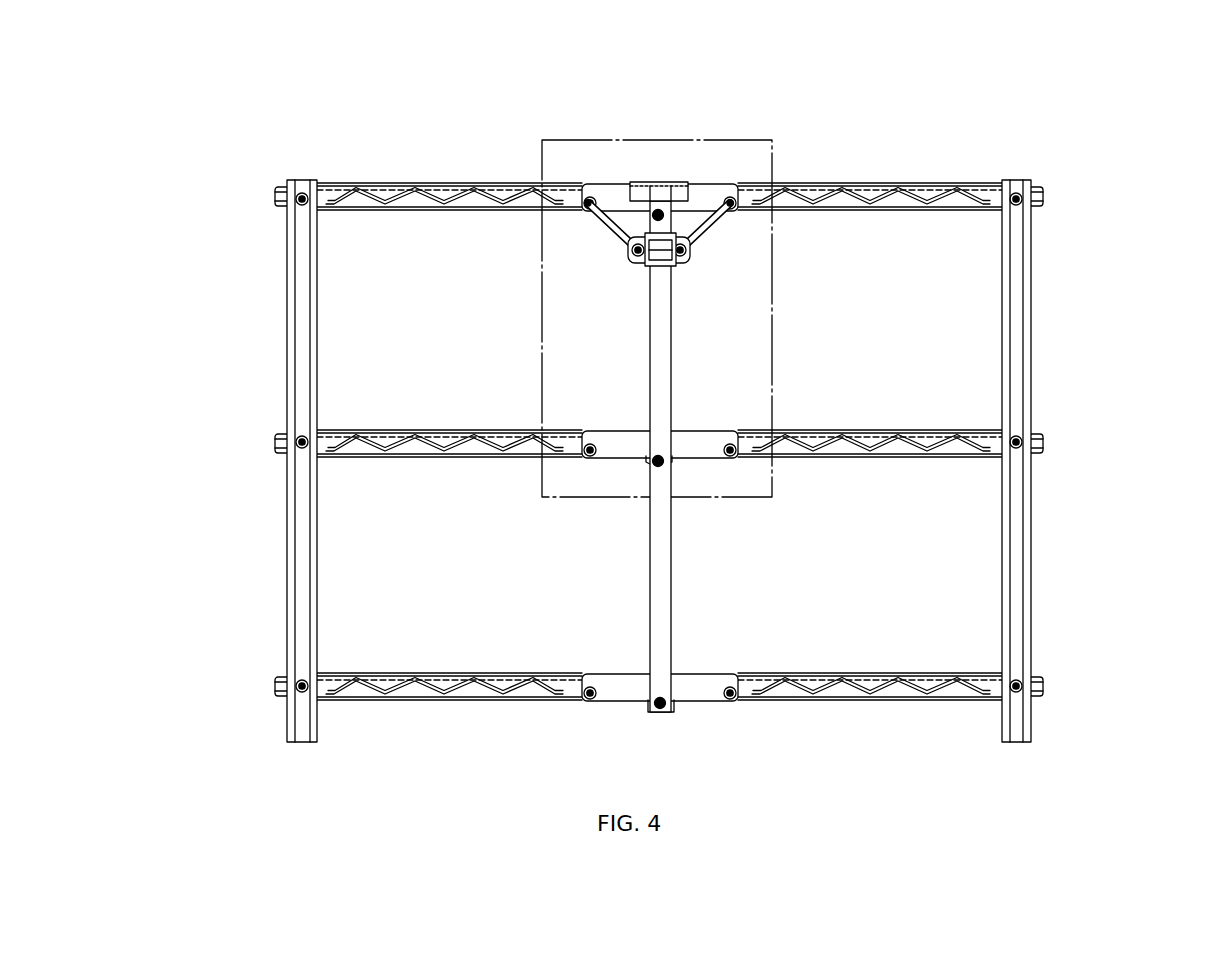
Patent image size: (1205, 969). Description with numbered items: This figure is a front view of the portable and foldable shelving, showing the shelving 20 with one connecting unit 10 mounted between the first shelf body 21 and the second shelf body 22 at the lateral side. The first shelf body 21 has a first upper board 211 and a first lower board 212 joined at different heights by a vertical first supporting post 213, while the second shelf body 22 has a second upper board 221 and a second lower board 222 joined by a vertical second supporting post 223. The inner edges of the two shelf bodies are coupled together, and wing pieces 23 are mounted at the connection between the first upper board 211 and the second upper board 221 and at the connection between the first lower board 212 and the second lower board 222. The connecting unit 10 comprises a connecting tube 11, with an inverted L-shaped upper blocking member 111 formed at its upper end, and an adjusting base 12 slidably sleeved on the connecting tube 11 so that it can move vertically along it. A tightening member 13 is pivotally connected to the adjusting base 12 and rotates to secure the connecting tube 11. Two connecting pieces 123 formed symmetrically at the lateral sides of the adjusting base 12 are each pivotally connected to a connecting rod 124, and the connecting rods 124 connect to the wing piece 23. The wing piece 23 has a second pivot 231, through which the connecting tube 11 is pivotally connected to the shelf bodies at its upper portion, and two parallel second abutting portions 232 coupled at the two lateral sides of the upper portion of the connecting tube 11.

The connecting unit 10 is at (733, 168).
The connecting tube 11 is at (657, 322).
The upper blocking member 111 is at (636, 183).
The adjusting base 12 is at (636, 258).
The connecting piece 123 is at (686, 252).
The connecting rod 124 is at (712, 220).
The tightening member 13 is at (669, 264).
The shelving 20 is at (1064, 168).
The first shelf body 21 is at (1080, 424).
The first upper board 211 is at (888, 198).
The first lower board 212 is at (960, 690).
The first supporting post 213 is at (1020, 296).
The second shelf body 22 is at (263, 398).
The second upper board 221 is at (424, 196).
The second lower board 222 is at (401, 700).
The second supporting post 223 is at (302, 300).
The wing piece 23 is at (702, 190).
The second pivot 231 is at (652, 215).
The second abutting portion 232 is at (674, 686).